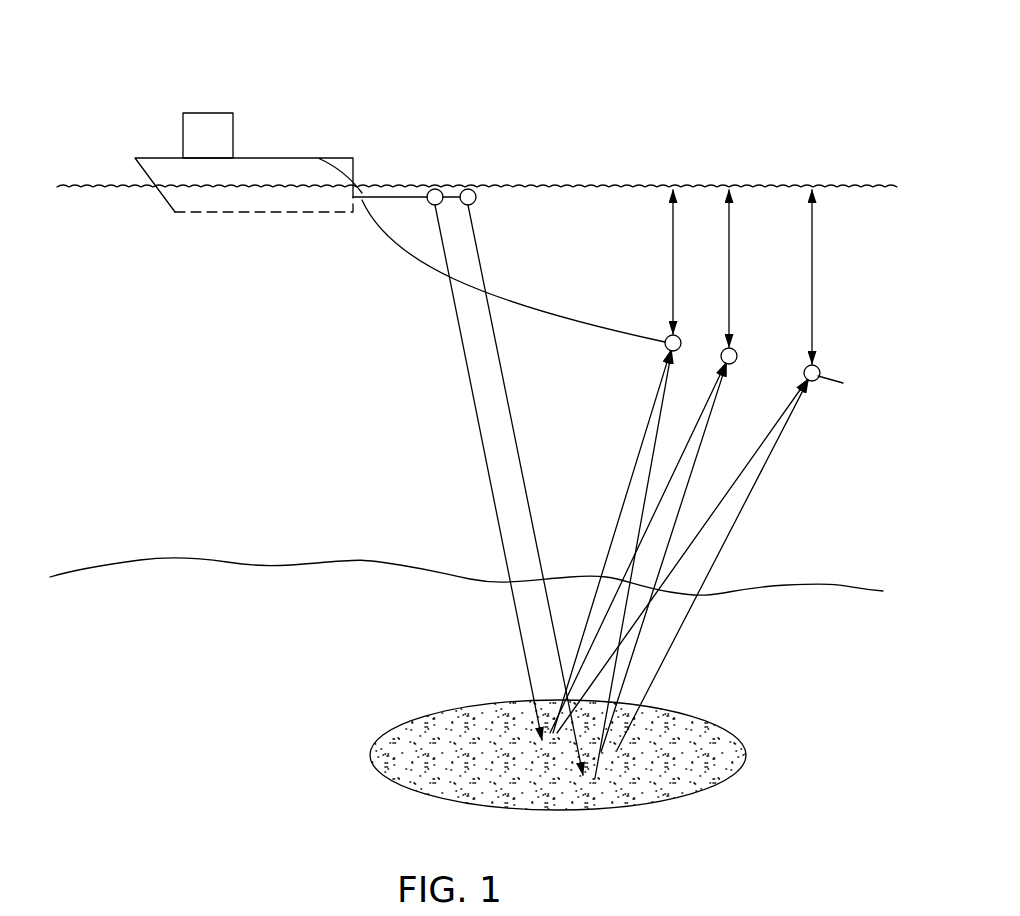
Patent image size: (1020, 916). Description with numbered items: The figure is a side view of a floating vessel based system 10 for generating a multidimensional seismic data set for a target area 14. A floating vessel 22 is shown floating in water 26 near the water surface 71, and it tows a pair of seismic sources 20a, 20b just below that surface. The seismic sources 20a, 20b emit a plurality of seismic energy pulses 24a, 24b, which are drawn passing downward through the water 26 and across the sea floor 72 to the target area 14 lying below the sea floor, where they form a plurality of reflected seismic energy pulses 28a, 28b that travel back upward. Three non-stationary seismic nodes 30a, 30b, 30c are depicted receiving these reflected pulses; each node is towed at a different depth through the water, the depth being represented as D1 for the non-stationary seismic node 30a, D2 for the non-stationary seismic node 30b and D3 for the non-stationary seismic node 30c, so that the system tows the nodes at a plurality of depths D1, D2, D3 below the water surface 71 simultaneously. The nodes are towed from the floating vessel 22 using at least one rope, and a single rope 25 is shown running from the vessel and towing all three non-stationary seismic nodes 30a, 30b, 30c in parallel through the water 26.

The floating vessel based system 10 is at (368, 74).
The floating vessel 22 is at (286, 158).
The seismic source 20a is at (439, 189).
The seismic source 20b is at (472, 189).
The rope 25 is at (382, 243).
The seismic energy pulse 24a is at (482, 443).
The seismic energy pulse 24b is at (517, 433).
The water surface 71 is at (763, 185).
The water 26 is at (850, 228).
The sea floor 72 is at (242, 563).
The non-stationary seismic node 30a is at (664, 345).
The non-stationary seismic node 30b is at (733, 365).
The non-stationary seismic node 30c is at (820, 368).
The depth D1 is at (671, 262).
The depth D2 is at (731, 262).
The depth D3 is at (815, 278).
The reflected seismic energy pulse 28a is at (759, 447).
The reflected seismic energy pulse 28b is at (738, 512).
The target area 14 is at (675, 708).